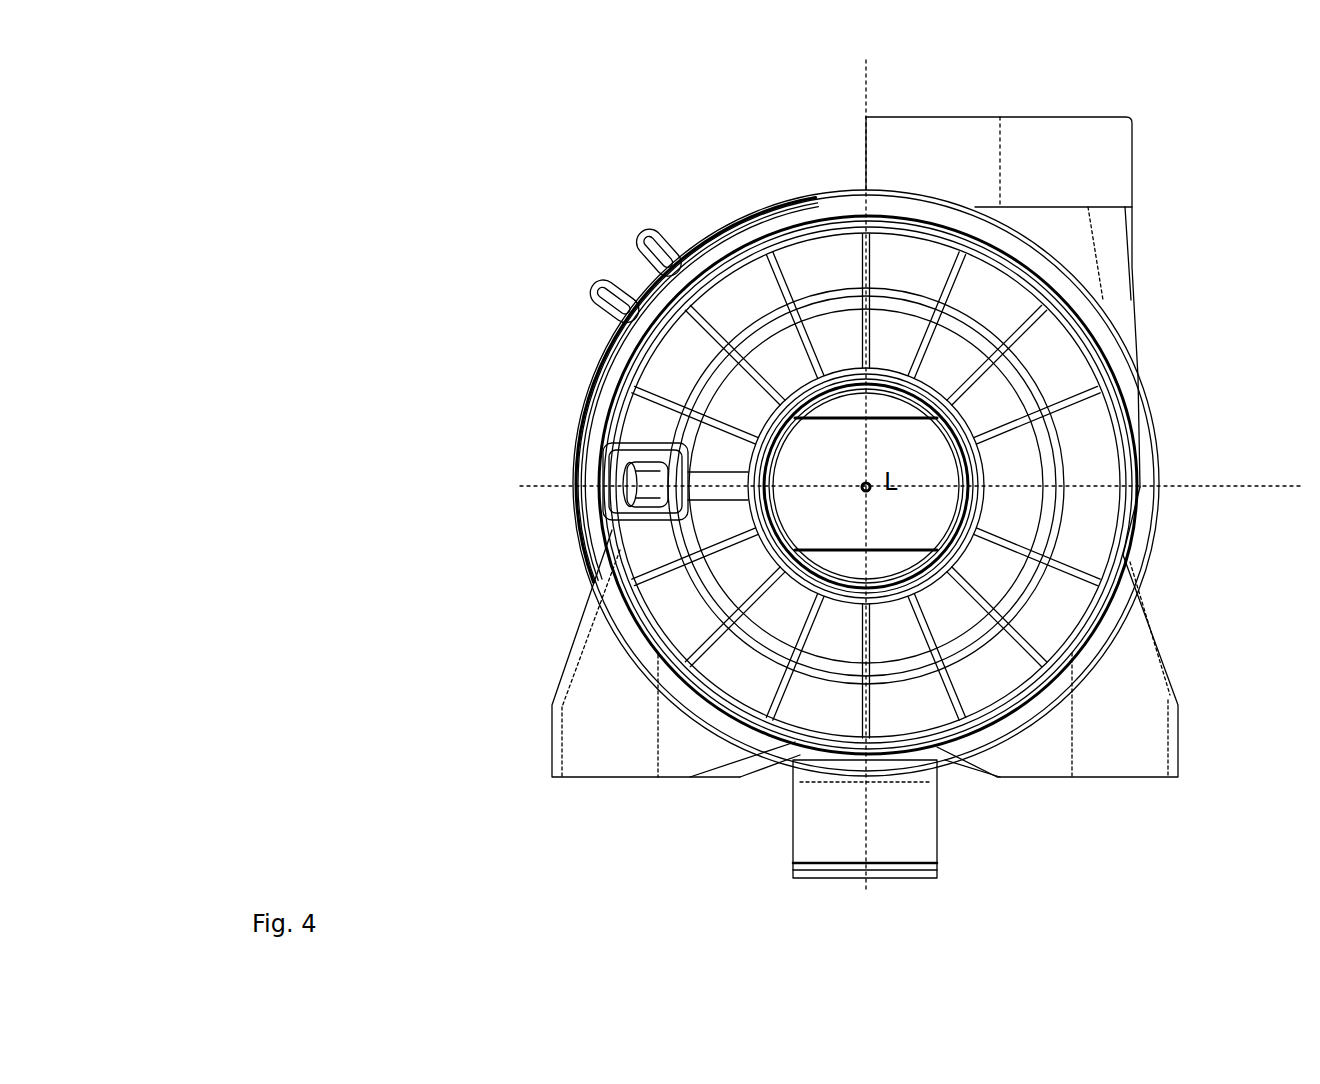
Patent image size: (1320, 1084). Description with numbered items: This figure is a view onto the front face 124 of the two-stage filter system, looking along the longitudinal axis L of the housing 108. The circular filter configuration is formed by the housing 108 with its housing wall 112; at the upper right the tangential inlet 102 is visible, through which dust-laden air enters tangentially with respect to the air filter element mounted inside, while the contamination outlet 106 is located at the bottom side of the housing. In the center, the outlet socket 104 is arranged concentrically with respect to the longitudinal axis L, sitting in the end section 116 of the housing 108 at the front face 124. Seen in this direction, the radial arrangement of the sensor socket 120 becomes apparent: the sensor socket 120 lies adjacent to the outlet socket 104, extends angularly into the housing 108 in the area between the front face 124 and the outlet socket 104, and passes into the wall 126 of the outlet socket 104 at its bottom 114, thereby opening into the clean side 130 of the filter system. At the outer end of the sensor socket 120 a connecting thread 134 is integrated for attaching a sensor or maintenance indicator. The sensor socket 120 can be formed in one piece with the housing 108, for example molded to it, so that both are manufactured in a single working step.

The tangential inlet 102 is at (1138, 157).
The outlet socket 104 is at (975, 486).
The contamination outlet 106 is at (945, 805).
The housing 108 is at (702, 218).
The housing wall 112 is at (750, 237).
The bottom of the outlet socket 114 is at (745, 505).
The end section 116 is at (1160, 356).
The sensor socket 120 is at (627, 437).
The front face 124 is at (1063, 370).
The wall of the outlet socket 126 is at (790, 566).
The clean side 130 is at (830, 505).
The connecting thread 134 is at (605, 487).